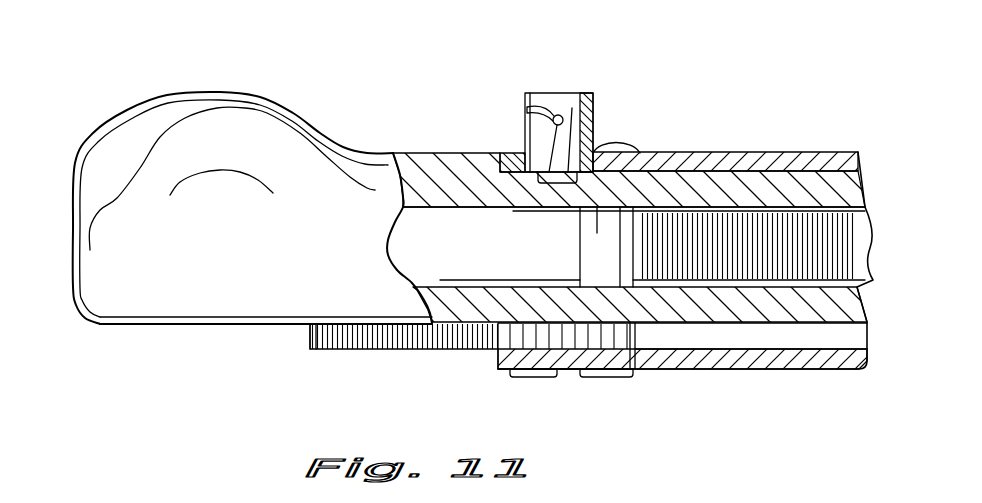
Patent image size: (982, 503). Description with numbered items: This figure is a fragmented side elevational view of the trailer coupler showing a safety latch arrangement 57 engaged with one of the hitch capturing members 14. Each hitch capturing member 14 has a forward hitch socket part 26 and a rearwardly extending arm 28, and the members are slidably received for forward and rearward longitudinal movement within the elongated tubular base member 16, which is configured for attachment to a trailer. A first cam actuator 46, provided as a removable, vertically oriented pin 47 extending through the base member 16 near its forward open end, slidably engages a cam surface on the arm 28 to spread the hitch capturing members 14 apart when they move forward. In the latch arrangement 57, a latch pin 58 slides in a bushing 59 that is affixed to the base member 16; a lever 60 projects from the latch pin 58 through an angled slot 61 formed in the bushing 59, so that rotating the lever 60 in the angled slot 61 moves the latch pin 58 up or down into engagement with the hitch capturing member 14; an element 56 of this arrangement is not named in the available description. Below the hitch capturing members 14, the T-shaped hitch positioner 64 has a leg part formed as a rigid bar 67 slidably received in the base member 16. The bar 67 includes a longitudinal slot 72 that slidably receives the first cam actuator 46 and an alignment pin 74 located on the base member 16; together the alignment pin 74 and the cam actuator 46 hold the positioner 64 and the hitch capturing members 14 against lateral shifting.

The hitch capturing member 14 is at (276, 96).
The forward hitch socket part 26 is at (167, 173).
The elongated tubular base member 16 is at (773, 152).
The rearwardly extending arm 28 is at (825, 192).
The first cam actuator 46 is at (625, 147).
The valve assembly 57 is at (580, 142).
The latch pin 58 is at (567, 137).
The bushing 59 is at (593, 95).
The lever 60 is at (560, 113).
The angled slot 61 is at (527, 117).
The valve seat 56 is at (556, 183).
The pin 47 is at (608, 260).
The hitch positioner 64 is at (360, 352).
The rigid bar 67 is at (320, 337).
The alignment pin 74 is at (533, 342).
The longitudinal slot 72 is at (712, 337).